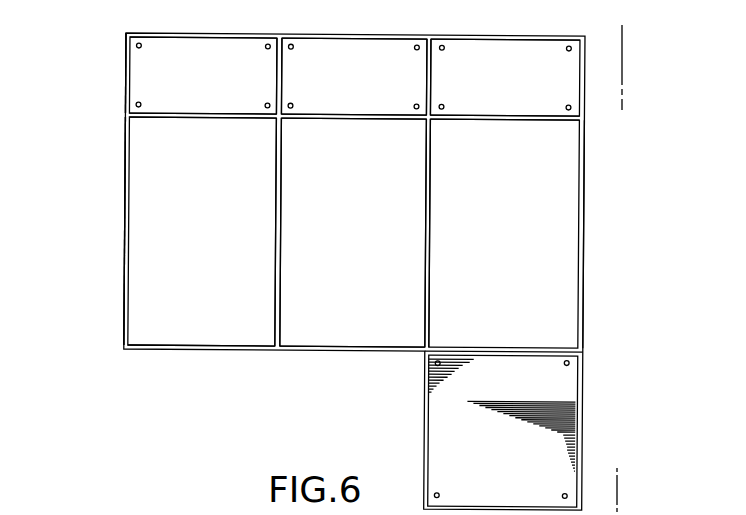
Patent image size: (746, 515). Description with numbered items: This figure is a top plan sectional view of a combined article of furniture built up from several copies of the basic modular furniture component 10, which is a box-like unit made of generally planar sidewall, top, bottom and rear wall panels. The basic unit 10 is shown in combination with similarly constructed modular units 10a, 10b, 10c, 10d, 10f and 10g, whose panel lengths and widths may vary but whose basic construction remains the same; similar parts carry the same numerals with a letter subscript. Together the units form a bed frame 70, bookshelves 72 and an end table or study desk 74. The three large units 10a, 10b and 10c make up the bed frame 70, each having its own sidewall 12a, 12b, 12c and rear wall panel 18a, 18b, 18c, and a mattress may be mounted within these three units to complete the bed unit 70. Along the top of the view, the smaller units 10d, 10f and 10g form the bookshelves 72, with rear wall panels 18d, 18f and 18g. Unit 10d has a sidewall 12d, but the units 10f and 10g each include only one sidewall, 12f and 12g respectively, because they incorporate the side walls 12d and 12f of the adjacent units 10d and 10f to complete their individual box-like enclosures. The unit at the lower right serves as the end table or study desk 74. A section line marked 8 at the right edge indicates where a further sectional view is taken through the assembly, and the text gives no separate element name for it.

The section line 8- 8 is at (595, 31).
The modular furniture component 10 is at (585, 421).
The modular unit 10a is at (587, 221).
The modular unit 10b is at (333, 212).
The modular unit 10c is at (172, 212).
The modular unit 10d is at (514, 36).
The modular unit 10f is at (357, 35).
The modular unit 10g is at (199, 35).
The sidewall member 12a is at (485, 118).
The sidewall member 12b is at (335, 118).
The sidewall member 12c is at (196, 118).
The sidewall member 12d is at (433, 80).
The sidewall member 12f is at (283, 80).
The sidewall member 12g is at (126, 63).
The rear wall panel 18a is at (431, 260).
The rear wall panel 18b is at (282, 258).
The rear wall panel 18c is at (130, 258).
The rear wall panel 18d is at (480, 36).
The rear wall panel 18f is at (323, 35).
The rear wall panel 18g is at (186, 35).
The bed frame 70 is at (108, 216).
The bookshelves 72 is at (122, 86).
The end table or study desk 74 is at (418, 428).